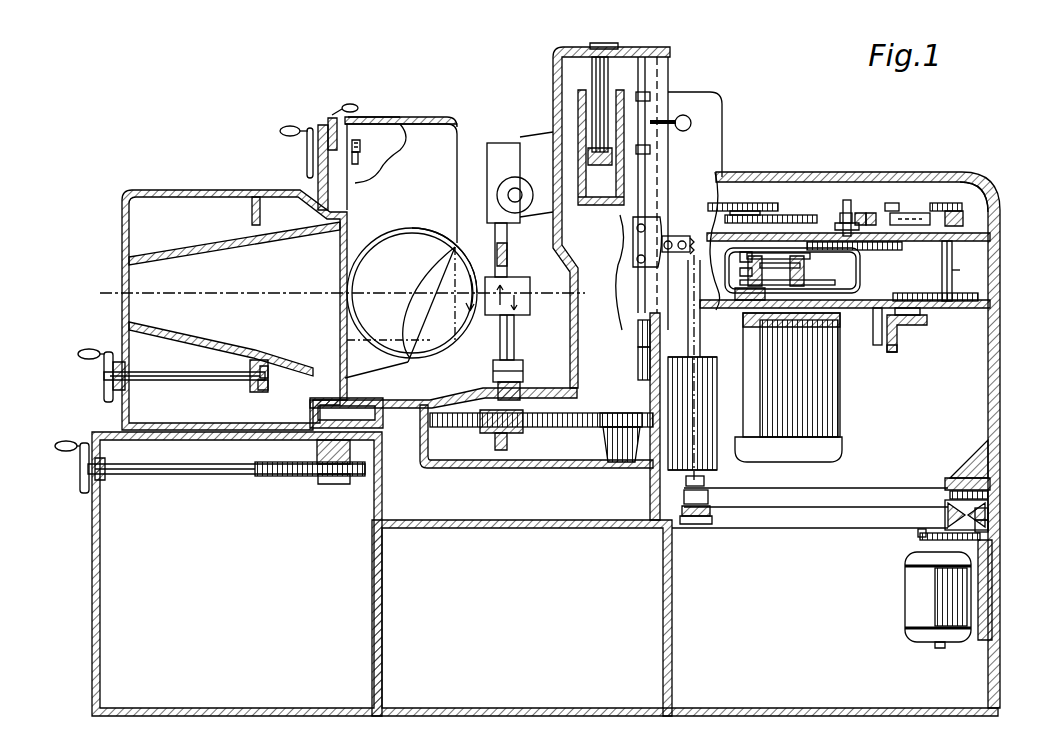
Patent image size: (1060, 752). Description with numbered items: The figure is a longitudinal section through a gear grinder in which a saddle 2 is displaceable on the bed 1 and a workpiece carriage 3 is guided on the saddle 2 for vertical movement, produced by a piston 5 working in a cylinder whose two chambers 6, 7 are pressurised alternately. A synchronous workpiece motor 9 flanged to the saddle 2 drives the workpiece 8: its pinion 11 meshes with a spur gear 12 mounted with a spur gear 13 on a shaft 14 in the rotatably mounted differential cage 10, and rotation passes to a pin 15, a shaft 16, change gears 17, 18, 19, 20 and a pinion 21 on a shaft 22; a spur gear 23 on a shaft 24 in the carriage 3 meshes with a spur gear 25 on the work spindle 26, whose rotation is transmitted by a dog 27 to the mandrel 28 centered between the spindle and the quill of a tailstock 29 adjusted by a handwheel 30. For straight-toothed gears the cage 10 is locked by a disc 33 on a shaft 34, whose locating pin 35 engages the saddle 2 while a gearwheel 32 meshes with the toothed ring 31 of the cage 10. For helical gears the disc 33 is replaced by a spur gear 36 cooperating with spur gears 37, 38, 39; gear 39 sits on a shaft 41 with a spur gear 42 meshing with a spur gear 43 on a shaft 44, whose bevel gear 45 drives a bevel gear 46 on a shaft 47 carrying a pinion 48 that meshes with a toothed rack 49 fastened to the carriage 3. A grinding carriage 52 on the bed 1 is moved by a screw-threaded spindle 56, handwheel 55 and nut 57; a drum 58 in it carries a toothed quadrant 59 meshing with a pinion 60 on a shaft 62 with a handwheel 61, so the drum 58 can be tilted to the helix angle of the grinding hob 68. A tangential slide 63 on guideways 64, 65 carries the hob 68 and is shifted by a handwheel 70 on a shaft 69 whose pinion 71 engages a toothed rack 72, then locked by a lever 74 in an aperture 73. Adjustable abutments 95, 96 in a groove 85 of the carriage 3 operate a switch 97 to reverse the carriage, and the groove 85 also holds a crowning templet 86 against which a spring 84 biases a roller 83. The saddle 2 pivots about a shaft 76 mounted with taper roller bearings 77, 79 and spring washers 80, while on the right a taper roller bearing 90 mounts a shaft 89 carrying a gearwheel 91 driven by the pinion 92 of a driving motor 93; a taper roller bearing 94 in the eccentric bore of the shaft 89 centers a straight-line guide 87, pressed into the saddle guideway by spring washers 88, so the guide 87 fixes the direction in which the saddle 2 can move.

The bed 1 is at (1000, 683).
The saddle 2 is at (993, 366).
The workpiece carriage 3 is at (562, 50).
The piston 5 is at (600, 145).
The chamber 6 is at (598, 182).
The chamber 7 is at (590, 110).
The workpiece 8 is at (531, 305).
The synchronous motor 9 is at (842, 417).
The cage 10 is at (865, 274).
The pinion 11 is at (836, 283).
The spur gear 12 is at (742, 292).
The spur gear 13 is at (740, 258).
The shaft 14 is at (742, 274).
The pin 15 is at (812, 258).
The shaft 16 is at (800, 265).
The change gear 17 is at (845, 200).
The change gear 18 is at (772, 215).
The change gear 19 is at (750, 213).
The change gear 20 is at (714, 202).
The pinion 21 is at (718, 455).
The shaft 22 is at (700, 346).
The spur gear 23 is at (590, 414).
The shaft 24 is at (630, 413).
The spur gear 25 is at (530, 422).
The work spindle 26 is at (520, 394).
The dog 27 is at (523, 372).
The mandrel 28 is at (514, 352).
The tailstock 29 is at (492, 170).
The handwheel 30 is at (497, 196).
The toothed ring 31 is at (824, 220).
The gearwheel 32 is at (895, 250).
The disc 33 is at (892, 203).
The shaft 34 is at (873, 213).
The locating pin 35 is at (860, 213).
The spur gear 36 is at (848, 213).
The spur gear 37 is at (940, 203).
The spur gear 38 is at (911, 202).
The spur gear 39 is at (955, 205).
The shaft 41 is at (955, 240).
The spur gear 42 is at (952, 290).
The spur gear 43 is at (893, 298).
The shaft 44 is at (925, 318).
The bevel gear 45 is at (922, 326).
The bevel gear 46 is at (895, 352).
The shaft 47 is at (878, 345).
The pinion 48 is at (638, 332).
The toothed rack 49 is at (638, 362).
The grinding carriage 52 is at (162, 190).
The handwheel 55 is at (80, 478).
The screw-threaded spindle 56 is at (287, 478).
The nut 57 is at (330, 484).
The drum 58 is at (226, 232).
The toothed quadrant 59 is at (270, 372).
The pinion 60 is at (266, 390).
The handwheel 61 is at (100, 384).
The shaft 62 is at (222, 382).
The tangential slide 63 is at (398, 117).
The guideway 64 is at (320, 125).
The guideway 65 is at (440, 348).
The grinding hob 68 is at (456, 250).
The shaft 69 is at (357, 117).
The handwheel 70 is at (306, 162).
The pinion 71 is at (358, 162).
The toothed rack 72 is at (360, 148).
The aperture 73 is at (331, 118).
The lever 74 is at (347, 104).
The shaft 76 is at (704, 484).
The taper roller bearing 77 is at (708, 497).
The taper roller bearing 79 is at (710, 510).
The spring washers 80 is at (700, 524).
The roller 83 is at (668, 238).
The spring 84 is at (693, 236).
The groove 85 is at (650, 60).
The crowning templet 86 is at (645, 222).
The straight-line guide 87 is at (992, 482).
The spring washers 88 is at (945, 518).
The shaft 89 is at (988, 528).
The taper roller bearing 90 is at (988, 512).
The gearwheel 91 is at (992, 545).
The pinion 92 is at (920, 535).
The driving motor 93 is at (905, 595).
The taper roller bearing 94 is at (988, 497).
The adjustable abutment 95 is at (650, 96).
The adjustable abutment 96 is at (650, 150).
The switch 97 is at (690, 118).